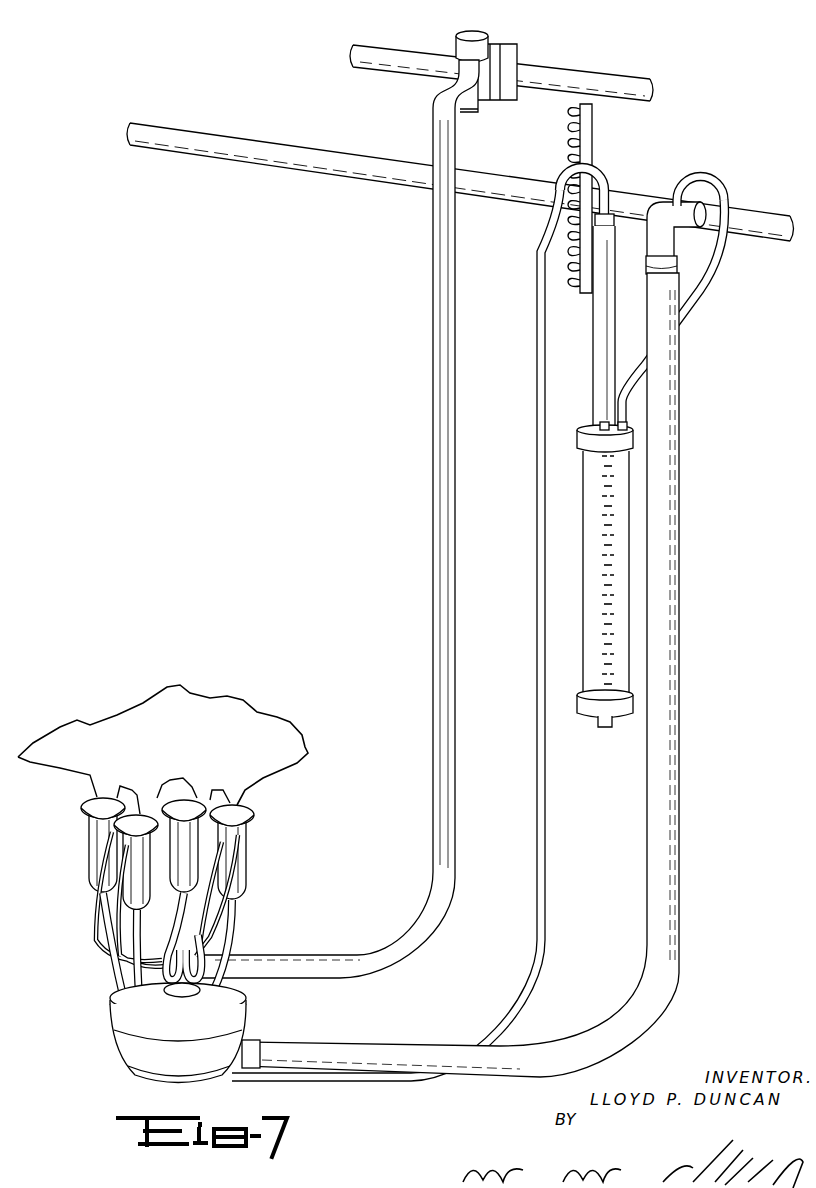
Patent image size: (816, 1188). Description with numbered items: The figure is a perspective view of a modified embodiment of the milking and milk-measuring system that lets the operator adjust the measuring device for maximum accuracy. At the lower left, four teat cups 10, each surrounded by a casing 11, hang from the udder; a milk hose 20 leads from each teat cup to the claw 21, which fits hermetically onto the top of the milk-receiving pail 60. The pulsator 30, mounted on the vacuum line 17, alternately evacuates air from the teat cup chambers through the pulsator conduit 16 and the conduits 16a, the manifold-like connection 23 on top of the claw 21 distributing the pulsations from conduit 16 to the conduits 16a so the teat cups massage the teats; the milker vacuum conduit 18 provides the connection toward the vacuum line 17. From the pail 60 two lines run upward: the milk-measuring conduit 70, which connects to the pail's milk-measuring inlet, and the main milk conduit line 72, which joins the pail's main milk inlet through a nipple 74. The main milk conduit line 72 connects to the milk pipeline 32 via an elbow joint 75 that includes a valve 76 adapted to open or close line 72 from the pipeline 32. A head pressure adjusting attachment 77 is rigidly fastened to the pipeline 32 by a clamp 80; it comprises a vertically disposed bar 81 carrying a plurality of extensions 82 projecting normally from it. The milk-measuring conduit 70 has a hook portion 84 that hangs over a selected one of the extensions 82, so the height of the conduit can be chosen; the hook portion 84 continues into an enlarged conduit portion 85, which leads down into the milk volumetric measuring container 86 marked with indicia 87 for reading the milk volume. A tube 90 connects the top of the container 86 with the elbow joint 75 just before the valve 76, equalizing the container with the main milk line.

The teat cup 10 is at (163, 884).
The casing 11 is at (246, 841).
The pulsator conduit 16 is at (430, 124).
The pulsator conduits 16a is at (104, 942).
The vacuum line 17 is at (553, 70).
The milker vacuum conduit 18 is at (448, 122).
The milk hose 20 is at (102, 921).
The claw 21 is at (108, 1002).
The manifold-like connection 23 is at (165, 995).
The pulsator 30 is at (460, 32).
The milk pipeline 32 is at (486, 176).
The milk-receiving pail 60 is at (163, 1033).
The milk-measuring conduit 70 is at (535, 264).
The main milk conduit line 72 is at (680, 360).
The nipple 74 is at (244, 1040).
The elbow joint 75 is at (677, 248).
The valve 76 is at (712, 186).
The head pressure adjusting attachment 77 is at (588, 198).
The clamp 80 is at (606, 204).
The vertically disposed bar 81 is at (592, 128).
The extensions 82 is at (568, 136).
The hook portion 84 is at (598, 171).
The enlarged conduit portion 85 is at (616, 318).
The milk volumetric measuring container 86 is at (630, 574).
The indicia 87 is at (600, 640).
The tube 90 is at (703, 284).